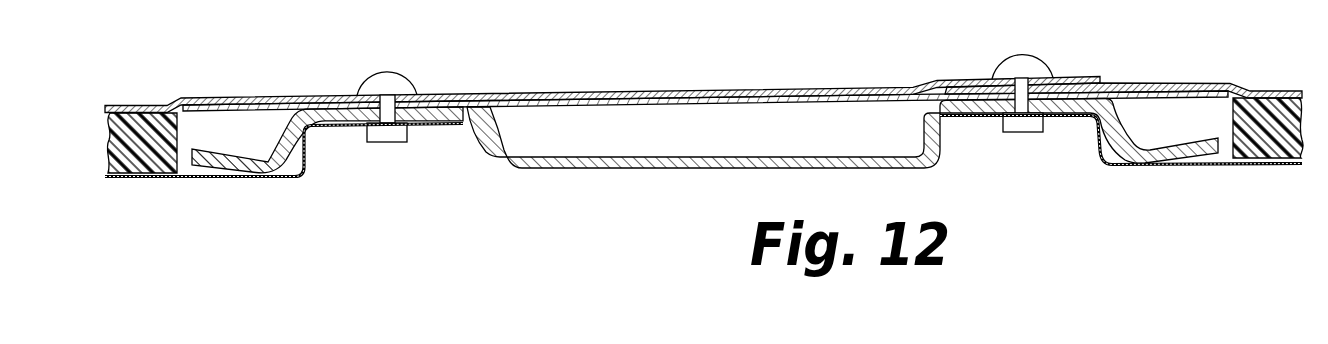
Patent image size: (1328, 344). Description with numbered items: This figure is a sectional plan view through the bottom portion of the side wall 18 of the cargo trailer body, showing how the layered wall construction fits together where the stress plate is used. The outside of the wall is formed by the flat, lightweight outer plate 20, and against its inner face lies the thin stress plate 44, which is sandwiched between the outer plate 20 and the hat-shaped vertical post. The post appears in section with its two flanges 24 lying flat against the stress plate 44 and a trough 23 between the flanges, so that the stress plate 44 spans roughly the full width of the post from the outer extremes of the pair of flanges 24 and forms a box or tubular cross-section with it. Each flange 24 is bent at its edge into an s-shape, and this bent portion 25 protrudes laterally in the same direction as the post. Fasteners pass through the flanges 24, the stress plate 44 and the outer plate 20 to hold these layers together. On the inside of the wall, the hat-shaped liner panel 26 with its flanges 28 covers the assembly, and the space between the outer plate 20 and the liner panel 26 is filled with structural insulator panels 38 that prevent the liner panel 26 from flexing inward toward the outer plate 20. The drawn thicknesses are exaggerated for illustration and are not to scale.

The side wall 18 is at (820, 63).
The outer plate 20 is at (550, 93).
The trough 23 is at (607, 157).
The flange 24 is at (440, 113).
The bent portion of flange 25 is at (217, 153).
The liner panel 26 is at (193, 179).
The liner panel flange 28 is at (447, 126).
The structural insulator panel 38 is at (177, 138).
The stress plate 44 is at (718, 104).